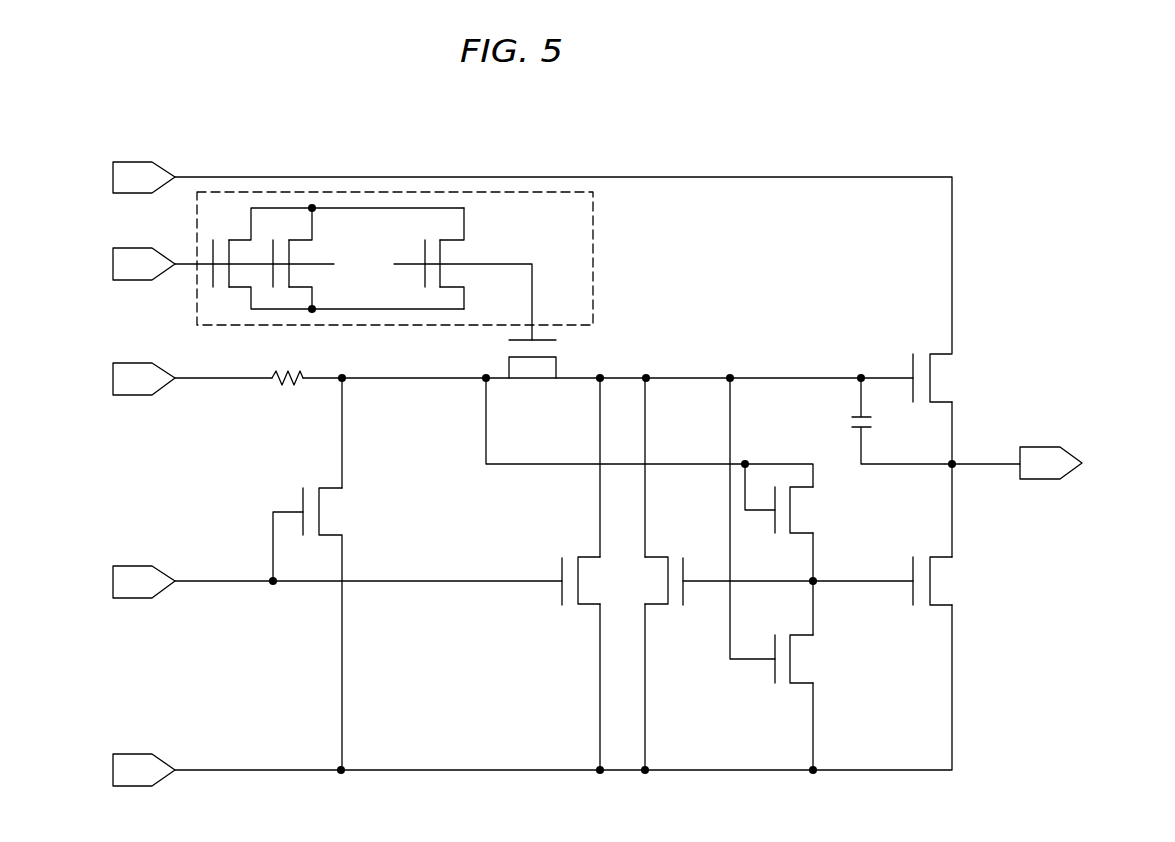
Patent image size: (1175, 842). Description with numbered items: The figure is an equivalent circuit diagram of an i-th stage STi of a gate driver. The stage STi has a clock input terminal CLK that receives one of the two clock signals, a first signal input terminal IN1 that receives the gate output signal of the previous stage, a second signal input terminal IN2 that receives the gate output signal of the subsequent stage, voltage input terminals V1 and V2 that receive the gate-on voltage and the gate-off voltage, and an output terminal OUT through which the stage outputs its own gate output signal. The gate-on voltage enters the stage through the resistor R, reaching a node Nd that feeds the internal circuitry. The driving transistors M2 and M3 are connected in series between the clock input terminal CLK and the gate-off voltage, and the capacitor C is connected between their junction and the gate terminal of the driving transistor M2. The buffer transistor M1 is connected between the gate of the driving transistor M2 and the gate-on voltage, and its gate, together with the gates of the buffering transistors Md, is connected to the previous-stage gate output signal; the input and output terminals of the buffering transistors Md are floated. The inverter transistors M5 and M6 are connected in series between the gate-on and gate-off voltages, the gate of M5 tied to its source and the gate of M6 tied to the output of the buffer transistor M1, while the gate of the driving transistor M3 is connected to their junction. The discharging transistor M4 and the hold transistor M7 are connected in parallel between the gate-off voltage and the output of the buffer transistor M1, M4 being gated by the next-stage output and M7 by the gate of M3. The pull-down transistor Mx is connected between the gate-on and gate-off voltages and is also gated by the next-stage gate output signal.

The i-th stage STi is at (548, 125).
The clock input terminal CLK is at (91, 165).
The first signal input terminal IN1 is at (95, 252).
The second signal input terminal IN2 is at (97, 570).
The voltage input terminal V1 is at (125, 367).
The voltage input terminal V2 is at (124, 758).
The output terminal OUT is at (1055, 450).
The resistor R is at (287, 368).
The node Nd is at (346, 418).
The pull-down transistor Mx is at (319, 629).
The buffer transistor M1 is at (532, 372).
The driving transistor M2 is at (949, 378).
The driving transistor M3 is at (949, 581).
The discharging transistor M4 is at (566, 579).
The inverter transistor M5 is at (780, 508).
The inverter transistor M6 is at (778, 657).
The hold transistor M7 is at (679, 579).
The capacitor C is at (891, 421).
The buffering transistors Md is at (593, 257).